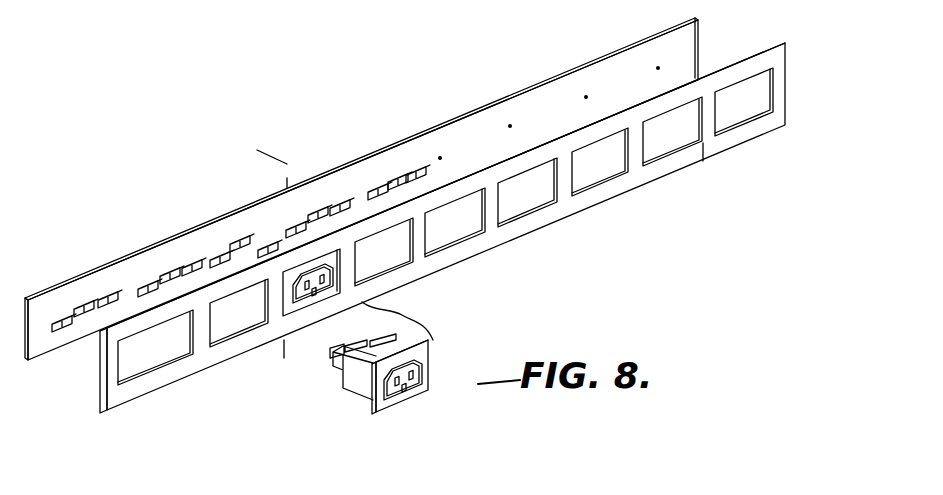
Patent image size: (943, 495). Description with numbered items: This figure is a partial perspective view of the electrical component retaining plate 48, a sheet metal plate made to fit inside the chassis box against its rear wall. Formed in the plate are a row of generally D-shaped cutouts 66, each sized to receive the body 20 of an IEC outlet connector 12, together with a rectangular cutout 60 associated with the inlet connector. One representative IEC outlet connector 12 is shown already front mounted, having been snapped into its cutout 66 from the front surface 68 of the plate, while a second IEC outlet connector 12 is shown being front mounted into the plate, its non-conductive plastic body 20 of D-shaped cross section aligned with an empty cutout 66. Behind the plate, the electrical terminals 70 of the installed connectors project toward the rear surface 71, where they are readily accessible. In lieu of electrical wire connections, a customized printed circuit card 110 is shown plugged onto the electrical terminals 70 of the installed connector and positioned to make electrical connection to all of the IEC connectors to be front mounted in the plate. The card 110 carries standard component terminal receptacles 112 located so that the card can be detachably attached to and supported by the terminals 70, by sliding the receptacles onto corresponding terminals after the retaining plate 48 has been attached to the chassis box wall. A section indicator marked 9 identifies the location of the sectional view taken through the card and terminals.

The printed circuit card 110 is at (540, 86).
The component terminal receptacles 112 is at (420, 180).
The retaining plate 48 is at (470, 219).
The rear surface of the plate 71 is at (744, 36).
The front surface of the plate 68 is at (703, 152).
The D-shaped cutouts 66 is at (238, 336).
The rectangular cutout 60 is at (163, 366).
The IEC outlet connector 12 is at (348, 265).
The non-conductive plastic body 20 is at (362, 388).
The electrical terminals 70 is at (336, 350).
The section line 9 is at (181, 121).